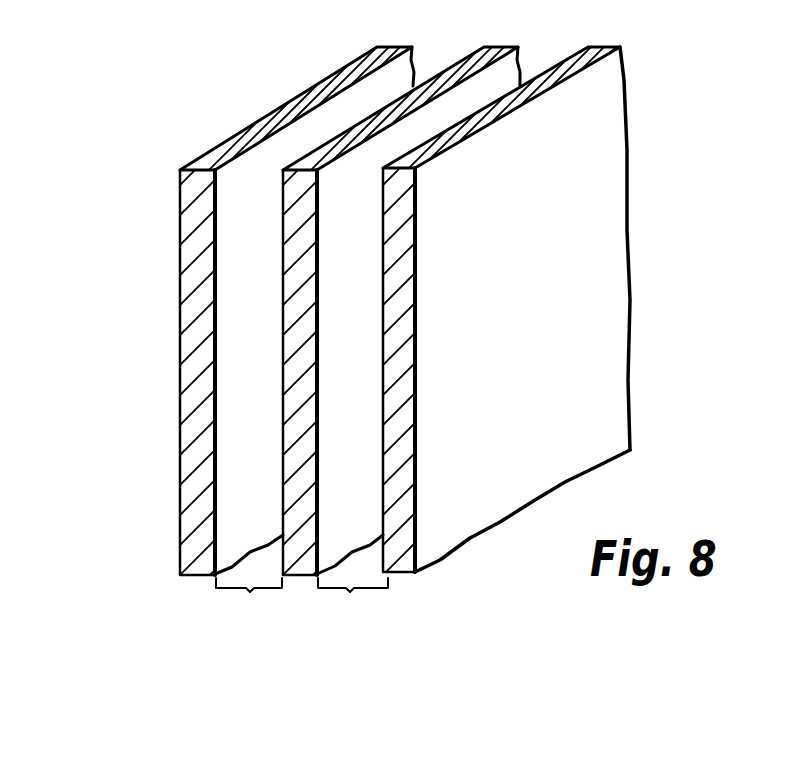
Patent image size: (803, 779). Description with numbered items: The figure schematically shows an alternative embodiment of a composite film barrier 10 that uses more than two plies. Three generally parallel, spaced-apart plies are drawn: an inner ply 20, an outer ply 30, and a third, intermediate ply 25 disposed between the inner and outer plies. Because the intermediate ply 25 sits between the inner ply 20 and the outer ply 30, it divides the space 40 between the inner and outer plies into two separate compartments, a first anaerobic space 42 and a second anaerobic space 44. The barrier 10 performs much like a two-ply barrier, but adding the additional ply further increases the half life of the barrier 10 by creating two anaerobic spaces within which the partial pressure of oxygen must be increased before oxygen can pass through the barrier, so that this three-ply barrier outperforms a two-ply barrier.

The barrier 10 is at (124, 114).
The inner ply 20 is at (250, 305).
The intermediate ply 25 is at (355, 305).
The outer ply 30 is at (475, 305).
The space 40 is at (350, 594).
The first anaerobic space 42 is at (427, 68).
The second anaerobic space 44 is at (543, 63).